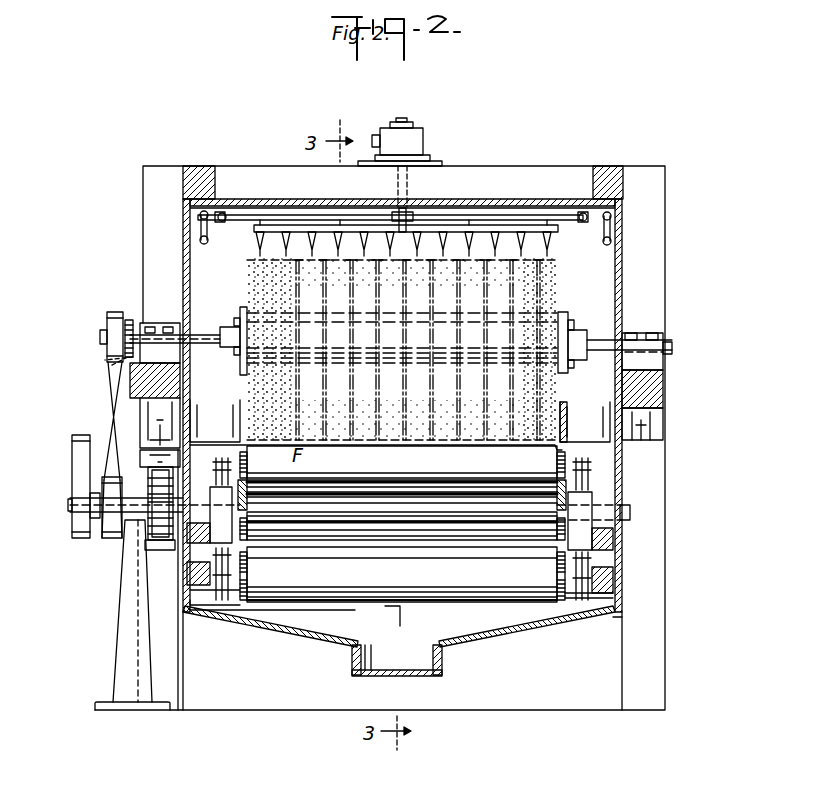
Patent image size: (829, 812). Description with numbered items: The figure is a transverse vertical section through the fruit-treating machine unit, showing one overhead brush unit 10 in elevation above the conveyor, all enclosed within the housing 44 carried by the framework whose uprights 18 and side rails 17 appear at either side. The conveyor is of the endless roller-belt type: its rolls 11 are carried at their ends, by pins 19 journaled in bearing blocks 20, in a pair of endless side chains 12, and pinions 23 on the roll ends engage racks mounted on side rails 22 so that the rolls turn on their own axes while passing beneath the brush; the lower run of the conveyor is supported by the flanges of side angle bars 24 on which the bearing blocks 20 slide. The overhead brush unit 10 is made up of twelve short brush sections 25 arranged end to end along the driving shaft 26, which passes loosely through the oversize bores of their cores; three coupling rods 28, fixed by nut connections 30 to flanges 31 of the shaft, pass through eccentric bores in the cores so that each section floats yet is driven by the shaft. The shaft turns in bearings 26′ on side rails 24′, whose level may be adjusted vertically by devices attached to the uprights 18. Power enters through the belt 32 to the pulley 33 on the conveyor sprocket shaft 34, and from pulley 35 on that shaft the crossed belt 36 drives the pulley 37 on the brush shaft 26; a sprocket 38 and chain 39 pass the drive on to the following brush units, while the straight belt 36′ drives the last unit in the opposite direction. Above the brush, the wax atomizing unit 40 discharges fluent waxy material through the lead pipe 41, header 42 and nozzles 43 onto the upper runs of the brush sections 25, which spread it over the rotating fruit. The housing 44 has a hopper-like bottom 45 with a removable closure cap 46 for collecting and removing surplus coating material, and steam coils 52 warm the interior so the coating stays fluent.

The drum 10 is at (569, 302).
The rolls 11 is at (410, 465).
The endless side chains 12 is at (232, 471).
The side rails 17 is at (178, 556).
The uprights 18 is at (143, 222).
The pins 19 is at (232, 596).
The bearing blocks 20 is at (580, 593).
The side rails 22 is at (250, 492).
The pinions 23 is at (240, 457).
The side angle bars 24 is at (190, 577).
The side rails 24′ is at (655, 386).
The brush sections 25 is at (241, 275).
The driving shaft 26 is at (672, 346).
The bearings 26′ is at (157, 338).
The coupling rods 28 is at (243, 314).
The nut connections 30 is at (232, 348).
The flanges 31 is at (220, 340).
The belt 32 is at (158, 470).
The pulley 33 is at (150, 528).
The sprocket shaft 34 is at (70, 508).
The pulley 35 is at (80, 492).
The crossed belt 36 is at (114, 422).
The straight belt 36′ is at (75, 448).
The pulley 37 is at (107, 327).
The sprocket 38 is at (131, 318).
The chain 39 is at (126, 356).
The wax atomizing unit 40 is at (424, 140).
The lead pipe 41 is at (407, 216).
The header 42 is at (448, 227).
The nozzles 43 is at (313, 247).
The housing 44 is at (198, 223).
The hopper or pan-like bottom 45 is at (456, 614).
The removable closure cap 46 is at (406, 677).
The steam coils 52 is at (206, 232).